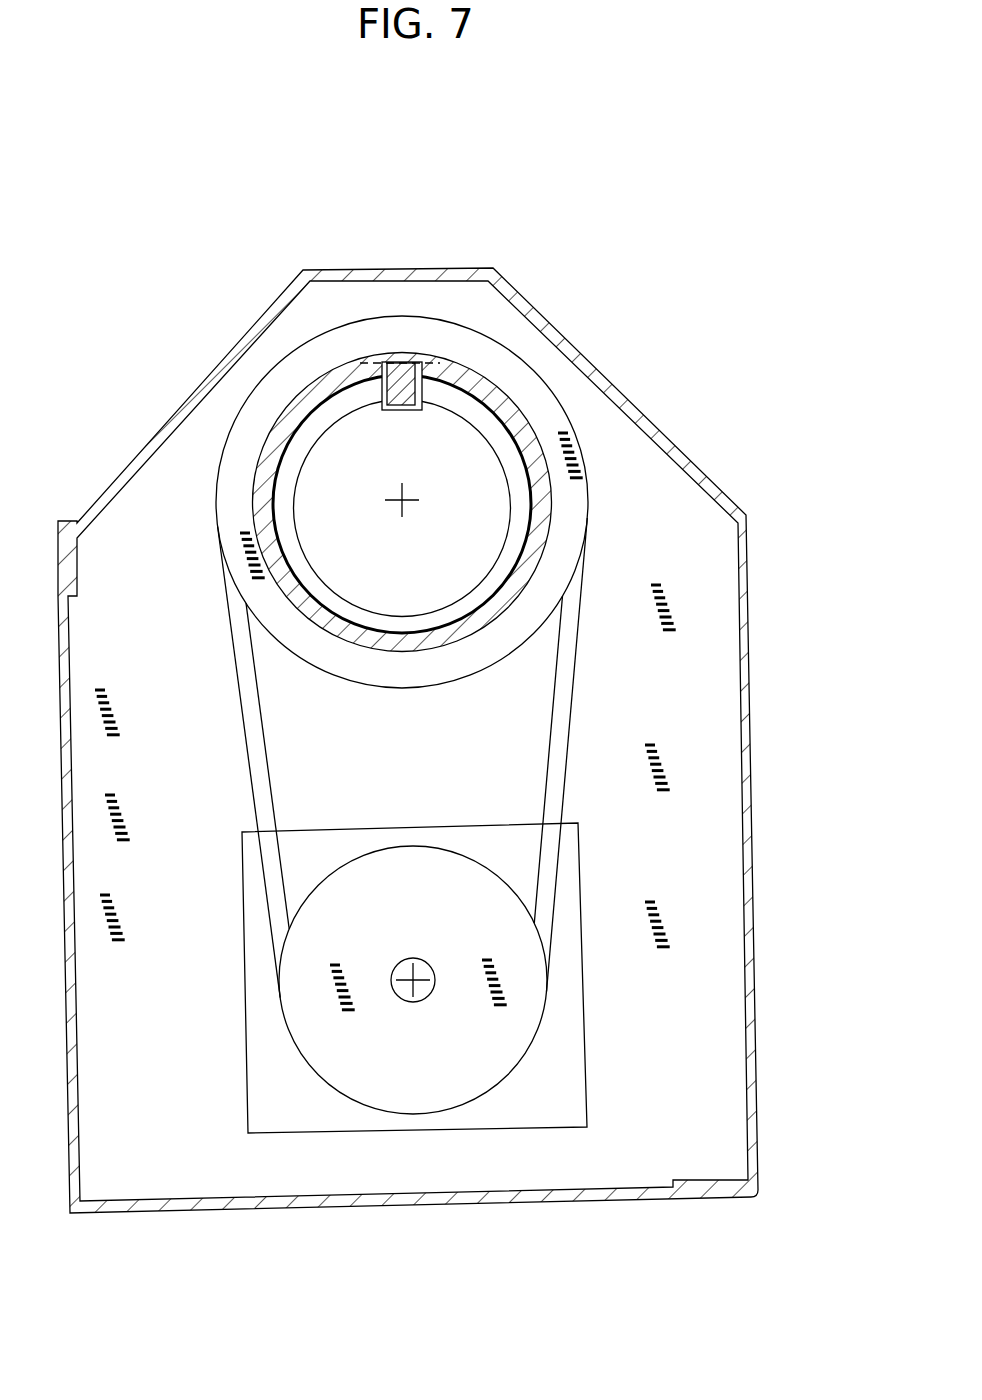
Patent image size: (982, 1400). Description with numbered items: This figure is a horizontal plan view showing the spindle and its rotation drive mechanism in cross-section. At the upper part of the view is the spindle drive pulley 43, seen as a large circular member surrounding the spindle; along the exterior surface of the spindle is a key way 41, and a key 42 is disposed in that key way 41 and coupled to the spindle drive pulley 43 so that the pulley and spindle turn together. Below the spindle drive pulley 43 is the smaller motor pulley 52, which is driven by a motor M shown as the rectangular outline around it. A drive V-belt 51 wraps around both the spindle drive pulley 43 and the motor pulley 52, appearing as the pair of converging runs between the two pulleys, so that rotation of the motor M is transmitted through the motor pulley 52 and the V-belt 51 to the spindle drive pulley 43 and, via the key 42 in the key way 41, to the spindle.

The key way 41 is at (380, 390).
The key 42 is at (430, 365).
The spindle drive pulley 43 is at (547, 410).
The drive V-belt 51 is at (568, 676).
The motor pulley 52 is at (437, 1080).
The motor M is at (565, 987).